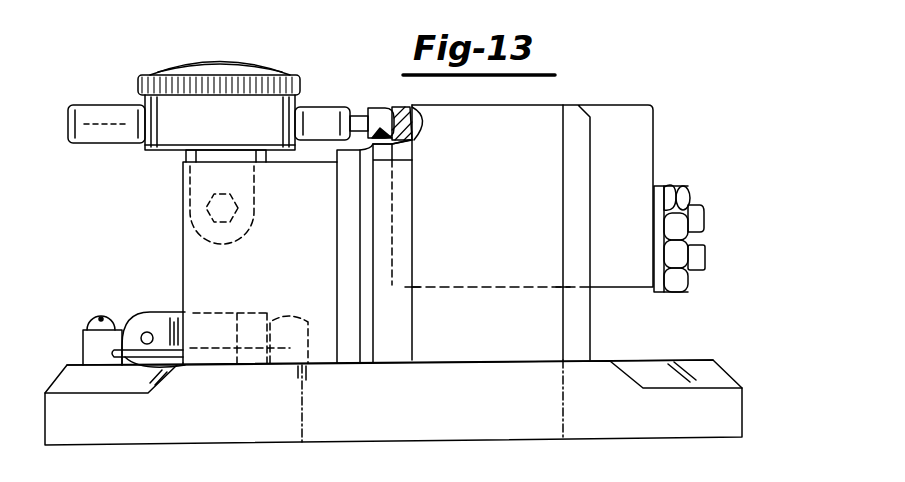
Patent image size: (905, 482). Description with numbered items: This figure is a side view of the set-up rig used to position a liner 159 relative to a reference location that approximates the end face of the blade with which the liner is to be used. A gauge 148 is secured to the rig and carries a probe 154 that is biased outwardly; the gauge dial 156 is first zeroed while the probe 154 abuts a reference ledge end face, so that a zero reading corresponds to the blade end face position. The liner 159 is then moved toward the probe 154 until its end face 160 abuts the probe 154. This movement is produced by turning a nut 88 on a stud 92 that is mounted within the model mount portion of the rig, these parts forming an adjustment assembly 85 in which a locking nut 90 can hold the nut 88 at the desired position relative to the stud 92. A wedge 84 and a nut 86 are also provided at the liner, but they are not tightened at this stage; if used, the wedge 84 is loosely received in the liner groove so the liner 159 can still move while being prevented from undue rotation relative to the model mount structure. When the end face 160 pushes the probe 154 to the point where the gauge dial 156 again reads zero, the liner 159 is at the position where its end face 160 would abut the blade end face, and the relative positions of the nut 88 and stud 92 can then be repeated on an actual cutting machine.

The gauge 148 is at (138, 86).
The gauge dial 156 is at (228, 62).
The probe 154 is at (388, 106).
The liner 159 is at (398, 108).
The end face 160 is at (396, 140).
The nut 88 is at (667, 190).
The locking nut 90 is at (686, 188).
The stud 92 is at (698, 207).
The adjustment assembly 85 is at (712, 241).
The wedge 84 is at (704, 257).
The nut 86 is at (676, 292).